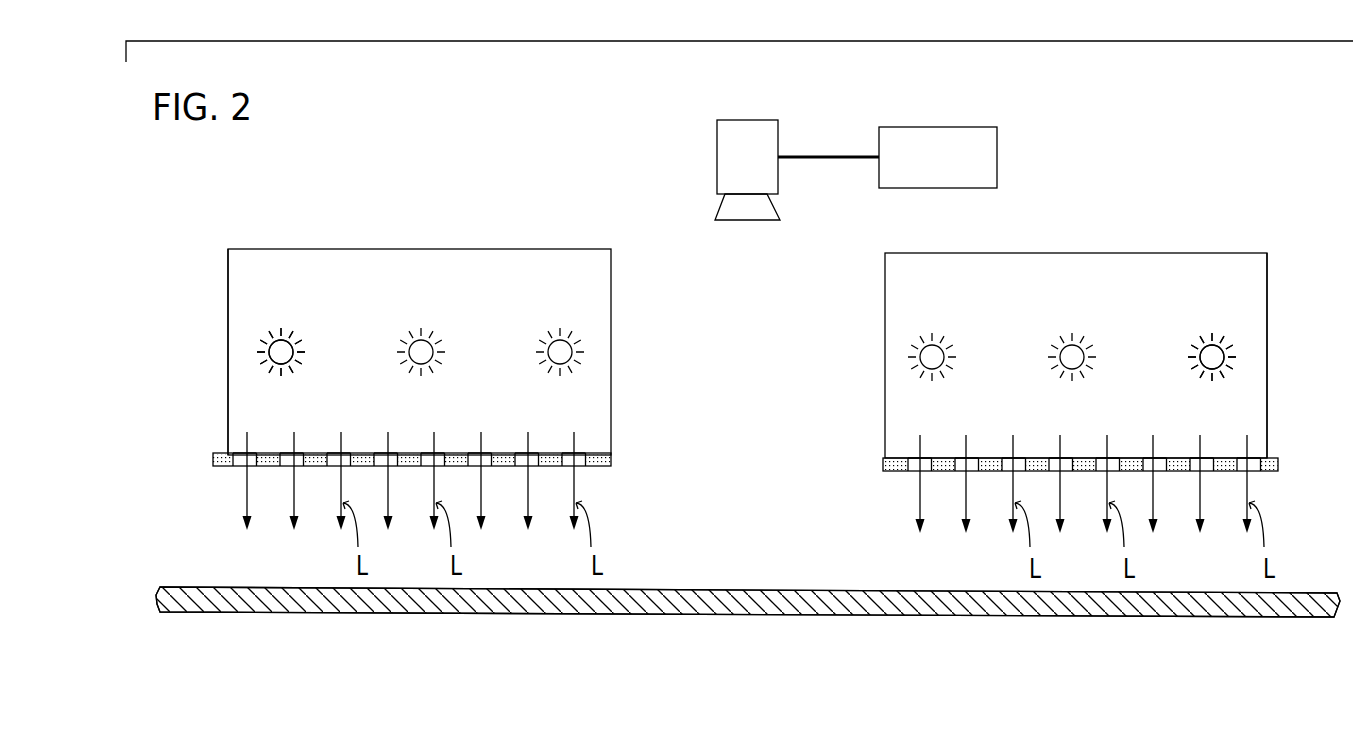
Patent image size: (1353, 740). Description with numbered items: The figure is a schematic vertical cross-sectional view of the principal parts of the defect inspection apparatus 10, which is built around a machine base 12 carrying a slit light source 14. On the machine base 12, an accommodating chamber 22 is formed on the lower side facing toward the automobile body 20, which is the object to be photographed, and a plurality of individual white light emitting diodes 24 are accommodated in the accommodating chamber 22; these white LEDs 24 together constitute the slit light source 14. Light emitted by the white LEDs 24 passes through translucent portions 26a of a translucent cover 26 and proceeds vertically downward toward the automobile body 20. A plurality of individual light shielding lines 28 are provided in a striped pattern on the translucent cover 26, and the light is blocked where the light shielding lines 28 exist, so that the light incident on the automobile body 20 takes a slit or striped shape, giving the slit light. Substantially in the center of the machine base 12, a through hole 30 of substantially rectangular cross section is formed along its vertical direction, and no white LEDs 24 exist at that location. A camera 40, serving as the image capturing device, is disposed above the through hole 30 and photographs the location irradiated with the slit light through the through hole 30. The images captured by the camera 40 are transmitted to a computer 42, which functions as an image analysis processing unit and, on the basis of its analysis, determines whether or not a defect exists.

The defect inspection apparatus 10 is at (1119, 143).
The machine base 12 is at (1281, 255).
The slit light source 14 is at (284, 307).
The automobile body 20 is at (1224, 612).
The accommodating chamber 22 is at (245, 286).
The white light emitting diode 24 is at (420, 340).
The translucent cover 26 is at (1132, 446).
The translucent portion 26a is at (257, 463).
The light shielding line 28 is at (318, 463).
The through hole 30 is at (612, 283).
The camera 40 is at (730, 141).
The computer 42 is at (939, 127).